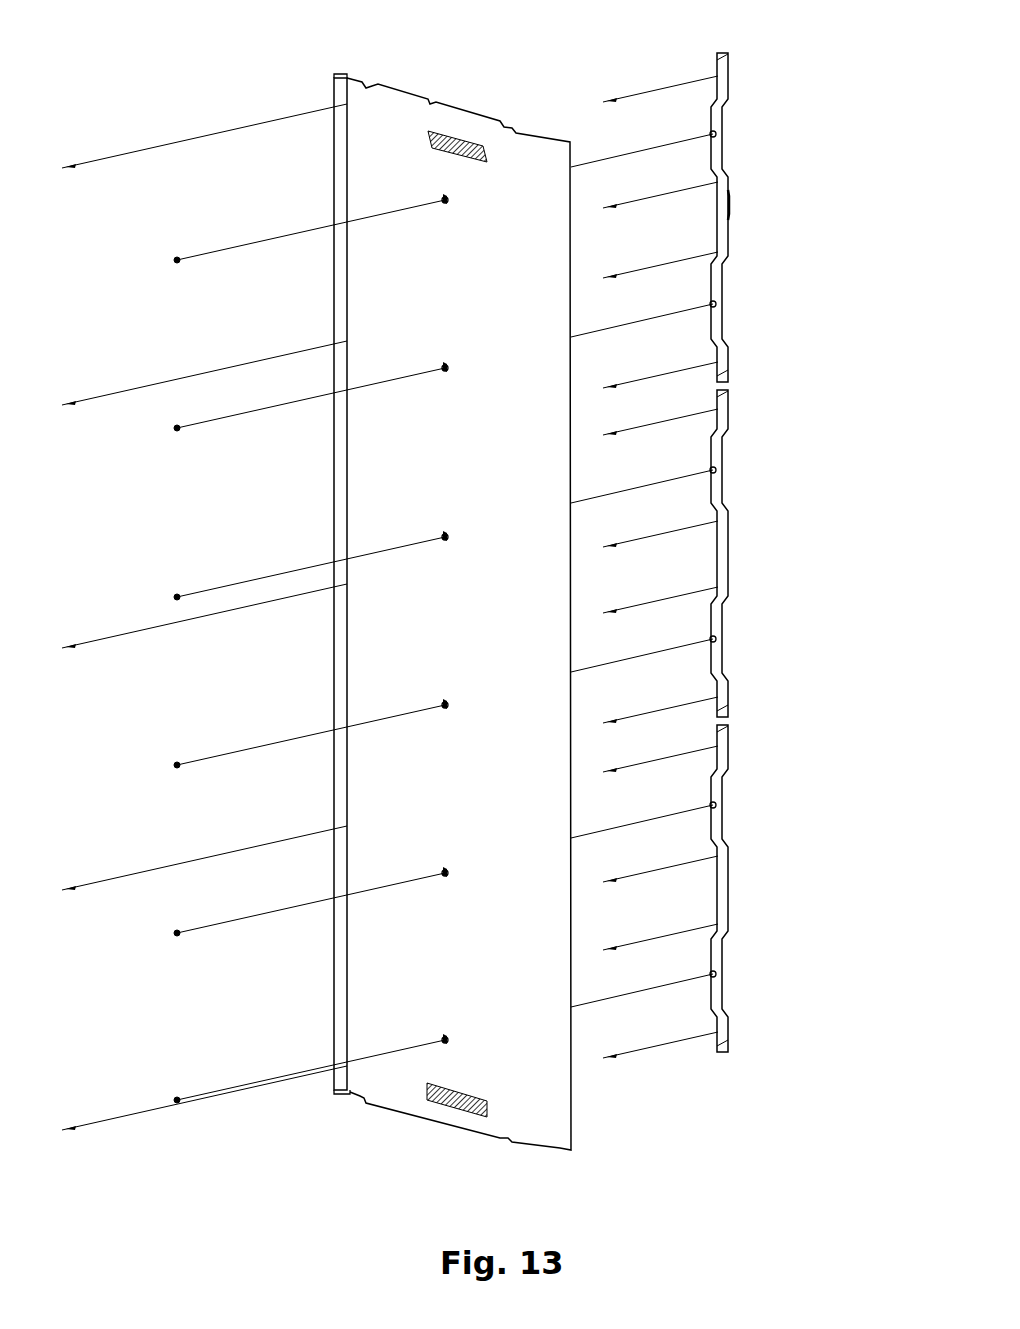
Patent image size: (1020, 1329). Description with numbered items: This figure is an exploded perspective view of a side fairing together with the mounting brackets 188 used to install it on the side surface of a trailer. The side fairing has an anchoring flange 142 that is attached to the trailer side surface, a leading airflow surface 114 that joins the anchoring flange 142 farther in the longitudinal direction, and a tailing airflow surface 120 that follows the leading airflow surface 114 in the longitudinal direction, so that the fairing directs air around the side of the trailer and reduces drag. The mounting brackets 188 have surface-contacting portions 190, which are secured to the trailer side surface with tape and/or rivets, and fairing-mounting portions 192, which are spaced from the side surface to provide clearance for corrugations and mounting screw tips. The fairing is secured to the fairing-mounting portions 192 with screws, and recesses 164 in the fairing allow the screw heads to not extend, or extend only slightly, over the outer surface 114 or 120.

The leading airflow surface 114 is at (398, 511).
The tailing airflow surface 120 is at (542, 535).
The anchoring flange 142 is at (334, 183).
The recesses 164 is at (444, 204).
The mounting brackets 188 is at (690, 55).
The surface-contacting portions 190 is at (728, 213).
The fairing-mounting portions 192 is at (722, 295).